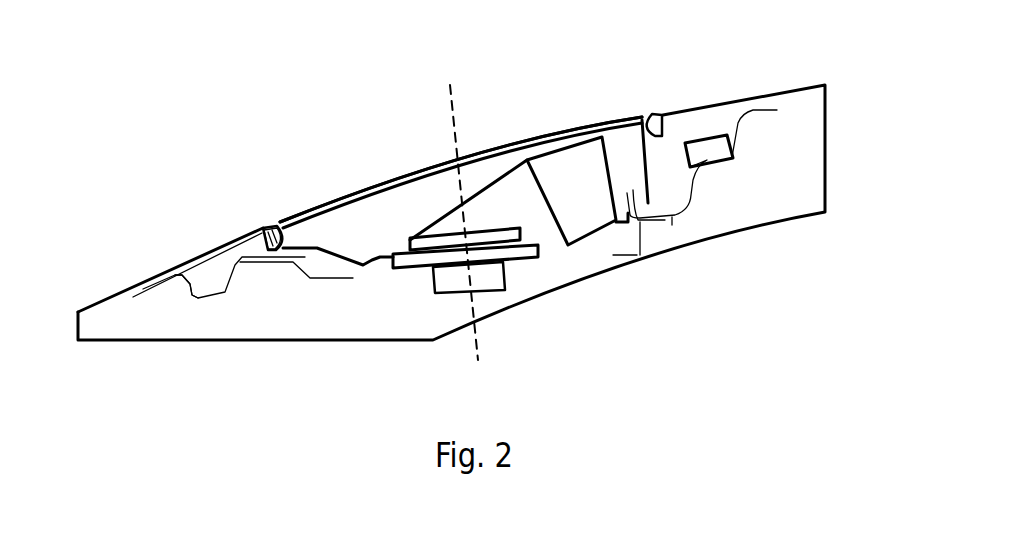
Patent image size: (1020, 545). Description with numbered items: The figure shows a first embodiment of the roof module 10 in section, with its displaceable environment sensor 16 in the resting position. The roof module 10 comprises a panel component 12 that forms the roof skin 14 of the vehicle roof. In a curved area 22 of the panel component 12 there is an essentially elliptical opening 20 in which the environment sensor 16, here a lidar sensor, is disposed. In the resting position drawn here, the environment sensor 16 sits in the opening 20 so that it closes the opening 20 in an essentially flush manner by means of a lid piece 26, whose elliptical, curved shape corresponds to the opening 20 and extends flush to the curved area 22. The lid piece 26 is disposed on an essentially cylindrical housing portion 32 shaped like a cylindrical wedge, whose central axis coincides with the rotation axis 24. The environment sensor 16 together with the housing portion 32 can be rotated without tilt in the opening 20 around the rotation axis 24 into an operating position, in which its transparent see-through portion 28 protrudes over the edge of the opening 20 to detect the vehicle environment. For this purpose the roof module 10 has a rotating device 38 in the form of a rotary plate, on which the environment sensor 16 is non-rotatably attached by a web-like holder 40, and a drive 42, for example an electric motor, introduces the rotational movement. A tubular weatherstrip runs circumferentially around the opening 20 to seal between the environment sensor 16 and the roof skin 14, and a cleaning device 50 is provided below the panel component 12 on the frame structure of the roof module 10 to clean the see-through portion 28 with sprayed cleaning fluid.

The roof module 10 is at (178, 197).
The panel component 12 is at (115, 297).
The roof skin 14 is at (158, 272).
The environment sensor 16 is at (560, 192).
The opening 20 is at (272, 220).
The curved area 22 is at (300, 148).
The rotation axis 24 is at (457, 132).
The lid piece 26 is at (387, 185).
The see-through portion 28 is at (647, 175).
The housing portion 32 is at (350, 237).
The rotating device 38 is at (503, 250).
The web-like holder 40 is at (528, 210).
The drive 42 is at (447, 282).
The cleaning device 50 is at (715, 150).